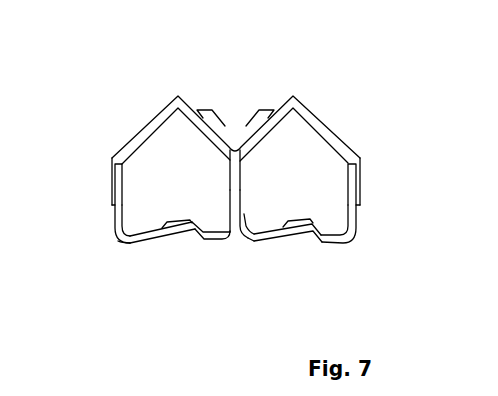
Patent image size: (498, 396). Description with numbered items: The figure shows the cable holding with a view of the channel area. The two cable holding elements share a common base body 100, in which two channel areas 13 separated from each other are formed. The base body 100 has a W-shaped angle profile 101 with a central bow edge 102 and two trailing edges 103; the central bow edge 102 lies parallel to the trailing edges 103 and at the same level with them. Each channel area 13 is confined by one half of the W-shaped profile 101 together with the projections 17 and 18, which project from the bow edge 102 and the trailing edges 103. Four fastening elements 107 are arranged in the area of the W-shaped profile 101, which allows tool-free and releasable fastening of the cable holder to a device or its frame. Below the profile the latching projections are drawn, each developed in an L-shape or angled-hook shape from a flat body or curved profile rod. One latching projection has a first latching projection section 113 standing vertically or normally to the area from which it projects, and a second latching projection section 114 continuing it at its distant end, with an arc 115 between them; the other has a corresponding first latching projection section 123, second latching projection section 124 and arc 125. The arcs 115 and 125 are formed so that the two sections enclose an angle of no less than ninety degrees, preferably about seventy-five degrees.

The base body 100 is at (302, 69).
The W-shaped angle profile 101 is at (230, 196).
The channel area 13 is at (191, 170).
The projection 17 is at (236, 184).
The projection 18 is at (117, 192).
The central bow edge 102 is at (231, 157).
The trailing edge 103 is at (117, 159).
The fastening element 107 is at (253, 108).
The first latching projection section 113 is at (116, 214).
The second latching projection section 114 is at (147, 238).
The arc 115 is at (122, 243).
The first latching projection section 123 is at (251, 242).
The second latching projection section 124 is at (190, 238).
The arc 125 is at (244, 232).